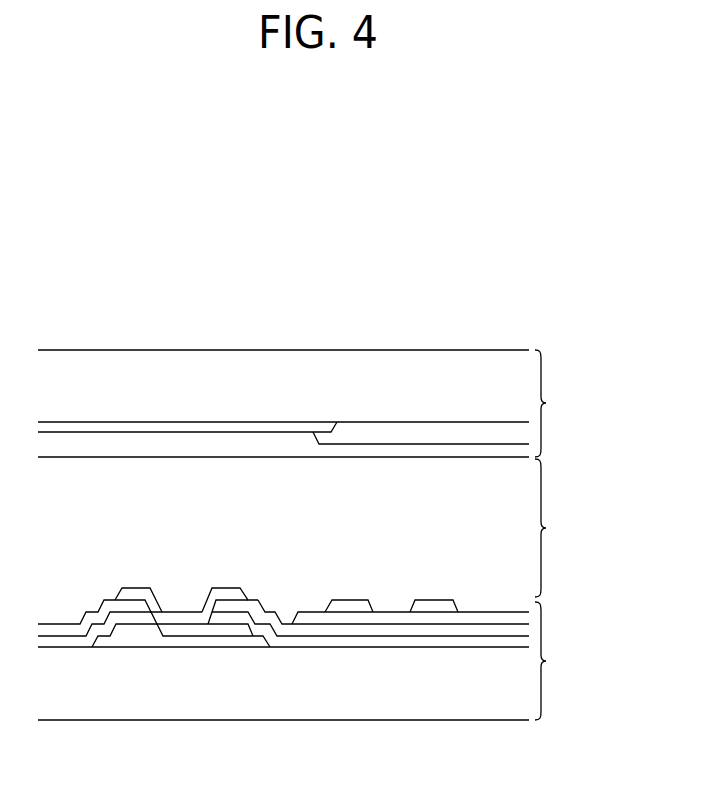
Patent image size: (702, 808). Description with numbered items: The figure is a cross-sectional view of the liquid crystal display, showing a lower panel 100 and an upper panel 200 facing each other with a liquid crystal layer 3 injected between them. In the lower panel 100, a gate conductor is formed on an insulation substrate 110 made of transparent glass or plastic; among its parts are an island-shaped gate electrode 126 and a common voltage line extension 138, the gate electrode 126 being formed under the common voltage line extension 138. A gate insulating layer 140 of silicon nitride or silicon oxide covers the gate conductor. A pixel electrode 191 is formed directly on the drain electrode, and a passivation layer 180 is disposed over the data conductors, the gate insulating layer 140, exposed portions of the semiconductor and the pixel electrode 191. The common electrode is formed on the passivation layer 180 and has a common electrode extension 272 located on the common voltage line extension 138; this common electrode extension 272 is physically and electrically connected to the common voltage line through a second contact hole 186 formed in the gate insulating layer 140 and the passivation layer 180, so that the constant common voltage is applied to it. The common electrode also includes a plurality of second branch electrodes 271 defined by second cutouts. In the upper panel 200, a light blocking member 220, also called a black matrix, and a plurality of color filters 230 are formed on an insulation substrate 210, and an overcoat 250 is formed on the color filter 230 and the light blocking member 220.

The liquid crystal layer 3 is at (548, 528).
The lower panel 100 is at (560, 661).
The insulation substrate 110 is at (293, 695).
The gate electrode 126 is at (144, 640).
The common voltage line extension 138 is at (203, 628).
The gate insulating layer 140 is at (74, 640).
The passivation layer 180 is at (58, 632).
The second contact hole 186 is at (165, 603).
The pixel electrode 191 is at (428, 632).
The upper panel 200 is at (560, 403).
The insulation substrate 210 is at (294, 375).
The light blocking member 220 is at (191, 427).
The color filter 230 is at (409, 436).
The overcoat 250 is at (117, 445).
The second branch electrode 271 is at (350, 607).
The common electrode extension 272 is at (227, 592).